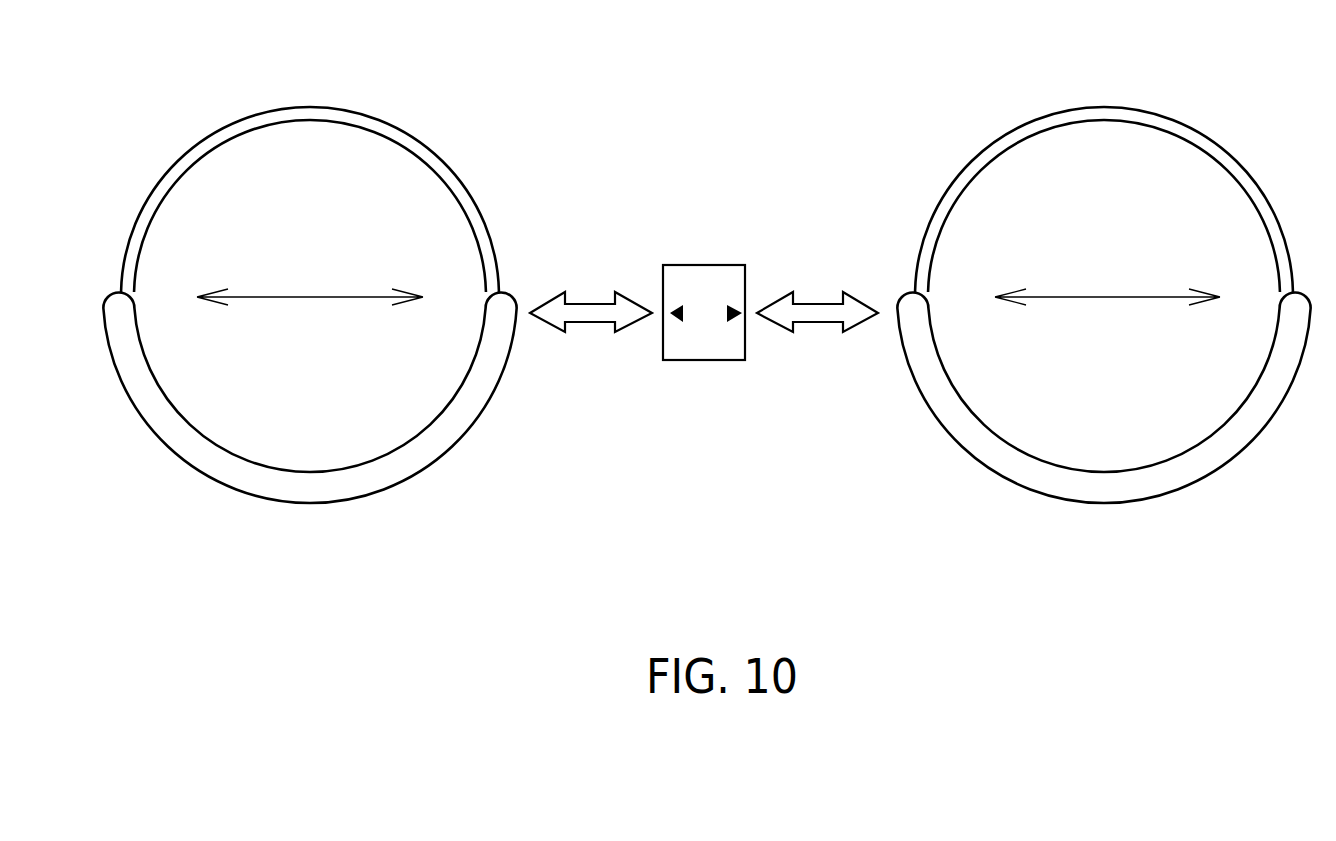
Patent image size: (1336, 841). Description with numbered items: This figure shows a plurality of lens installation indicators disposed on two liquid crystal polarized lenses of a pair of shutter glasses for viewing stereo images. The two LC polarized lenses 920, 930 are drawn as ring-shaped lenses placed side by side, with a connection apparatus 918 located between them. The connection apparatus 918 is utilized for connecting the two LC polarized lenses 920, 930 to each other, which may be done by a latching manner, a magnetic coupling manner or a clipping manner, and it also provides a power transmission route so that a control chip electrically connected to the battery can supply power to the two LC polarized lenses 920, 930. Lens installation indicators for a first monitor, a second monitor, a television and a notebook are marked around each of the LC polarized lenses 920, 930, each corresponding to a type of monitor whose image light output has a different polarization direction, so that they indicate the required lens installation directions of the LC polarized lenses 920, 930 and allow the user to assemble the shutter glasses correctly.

The LC polarized lens 920 is at (178, 212).
The LC polarized lens 930 is at (1243, 212).
The connection apparatus 918 is at (707, 285).